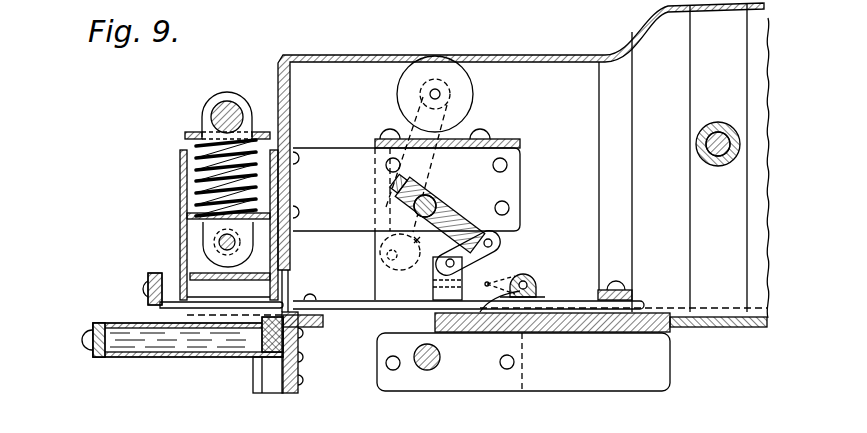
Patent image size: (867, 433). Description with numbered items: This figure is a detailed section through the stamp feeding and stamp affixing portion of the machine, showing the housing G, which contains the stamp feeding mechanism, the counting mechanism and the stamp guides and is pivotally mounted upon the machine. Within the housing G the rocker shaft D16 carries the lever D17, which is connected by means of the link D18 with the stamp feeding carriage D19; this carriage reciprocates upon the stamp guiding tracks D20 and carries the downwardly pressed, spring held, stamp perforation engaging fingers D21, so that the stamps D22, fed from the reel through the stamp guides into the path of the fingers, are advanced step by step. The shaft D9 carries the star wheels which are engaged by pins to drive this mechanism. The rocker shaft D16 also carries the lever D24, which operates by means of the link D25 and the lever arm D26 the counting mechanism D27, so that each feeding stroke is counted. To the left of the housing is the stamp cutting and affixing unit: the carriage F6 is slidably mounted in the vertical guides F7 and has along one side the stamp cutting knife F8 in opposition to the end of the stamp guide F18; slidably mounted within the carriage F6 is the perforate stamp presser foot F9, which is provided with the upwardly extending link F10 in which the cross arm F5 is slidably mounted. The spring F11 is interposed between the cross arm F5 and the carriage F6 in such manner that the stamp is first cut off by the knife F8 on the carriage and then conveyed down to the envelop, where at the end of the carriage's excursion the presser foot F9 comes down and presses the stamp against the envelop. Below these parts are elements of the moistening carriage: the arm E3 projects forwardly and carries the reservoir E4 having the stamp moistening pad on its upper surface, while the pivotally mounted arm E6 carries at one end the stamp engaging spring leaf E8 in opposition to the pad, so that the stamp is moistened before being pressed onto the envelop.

The housing G is at (572, 65).
The counting mechanism D27 is at (462, 82).
The lever arm D26 is at (403, 128).
The link D25 is at (388, 207).
The lever D17 is at (450, 218).
The rocker shaft D16 is at (428, 197).
The link D18 is at (487, 252).
The lever D24 is at (396, 262).
The stamp perforation engaging fingers D21 is at (505, 278).
The stamp feeding carriage D19 is at (478, 312).
The stamp guiding tracks D20 is at (558, 301).
The stamps D22 is at (708, 307).
The shaft D9 is at (427, 371).
The cross arm F5 is at (224, 106).
The link F10 is at (203, 121).
The spring F11 is at (198, 173).
The carriage F6 is at (180, 192).
The stamp presser foot F9 is at (220, 275).
The stamp cutting knife F8 is at (288, 247).
The arm E6 is at (148, 302).
The stamp engaging spring leaf E8 is at (180, 309).
The arm E3 is at (100, 328).
The reservoir E4 is at (117, 357).
The vertical guides F7 is at (260, 382).
The stamp guide F18 is at (299, 352).